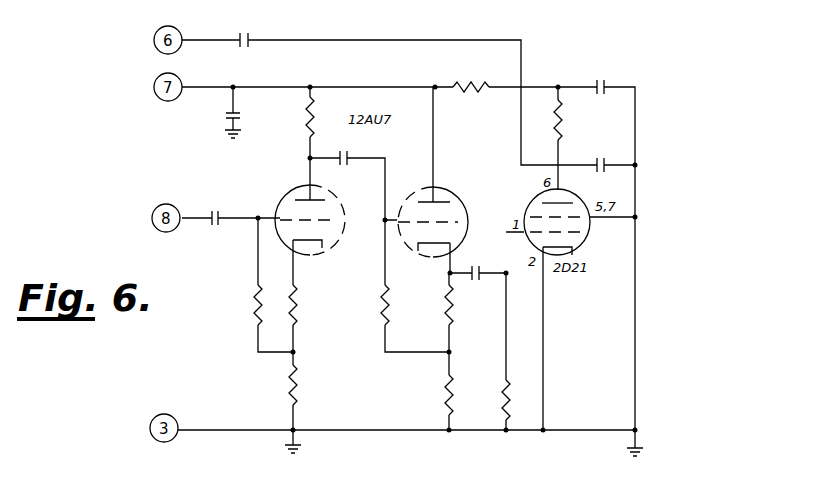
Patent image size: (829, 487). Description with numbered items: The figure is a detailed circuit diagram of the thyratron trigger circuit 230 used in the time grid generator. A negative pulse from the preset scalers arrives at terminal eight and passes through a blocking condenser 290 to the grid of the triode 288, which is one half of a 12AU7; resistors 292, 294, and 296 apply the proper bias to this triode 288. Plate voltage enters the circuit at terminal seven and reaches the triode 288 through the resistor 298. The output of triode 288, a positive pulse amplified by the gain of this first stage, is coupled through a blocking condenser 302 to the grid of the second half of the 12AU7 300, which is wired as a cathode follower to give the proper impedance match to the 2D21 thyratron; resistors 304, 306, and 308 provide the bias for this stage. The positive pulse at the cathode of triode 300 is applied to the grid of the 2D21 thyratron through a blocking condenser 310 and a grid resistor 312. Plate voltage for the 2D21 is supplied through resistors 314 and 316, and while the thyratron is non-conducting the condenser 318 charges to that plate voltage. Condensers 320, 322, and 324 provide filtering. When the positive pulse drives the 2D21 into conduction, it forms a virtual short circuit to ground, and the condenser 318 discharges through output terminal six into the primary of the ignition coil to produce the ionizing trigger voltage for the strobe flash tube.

The control circuit 230 is at (90, 486).
The triode 288 is at (283, 184).
The blocking condenser 290 is at (211, 210).
The resistor 292 is at (255, 300).
The resistor 294 is at (298, 301).
The resistor 296 is at (300, 380).
The resistor 298 is at (305, 122).
The second half of the 12AU7 300 is at (462, 190).
The blocking condenser 302 is at (341, 156).
The resistor 304 is at (389, 303).
The resistor 306 is at (452, 313).
The resistor 308 is at (445, 395).
The blocking condenser 310 is at (478, 278).
The grid resistor 312 is at (505, 380).
The resistor 314 is at (468, 84).
The resistor 316 is at (562, 124).
The condenser 318 is at (248, 37).
The condenser 320 is at (228, 112).
The condenser 322 is at (598, 84).
The condenser 324 is at (596, 160).